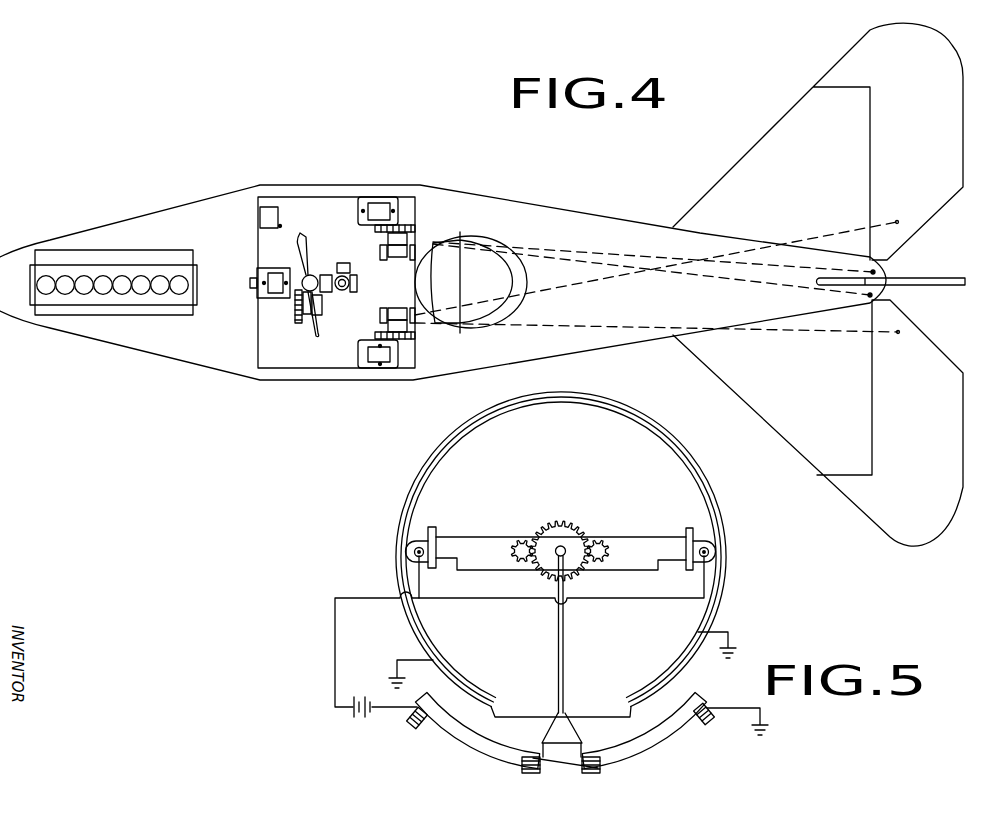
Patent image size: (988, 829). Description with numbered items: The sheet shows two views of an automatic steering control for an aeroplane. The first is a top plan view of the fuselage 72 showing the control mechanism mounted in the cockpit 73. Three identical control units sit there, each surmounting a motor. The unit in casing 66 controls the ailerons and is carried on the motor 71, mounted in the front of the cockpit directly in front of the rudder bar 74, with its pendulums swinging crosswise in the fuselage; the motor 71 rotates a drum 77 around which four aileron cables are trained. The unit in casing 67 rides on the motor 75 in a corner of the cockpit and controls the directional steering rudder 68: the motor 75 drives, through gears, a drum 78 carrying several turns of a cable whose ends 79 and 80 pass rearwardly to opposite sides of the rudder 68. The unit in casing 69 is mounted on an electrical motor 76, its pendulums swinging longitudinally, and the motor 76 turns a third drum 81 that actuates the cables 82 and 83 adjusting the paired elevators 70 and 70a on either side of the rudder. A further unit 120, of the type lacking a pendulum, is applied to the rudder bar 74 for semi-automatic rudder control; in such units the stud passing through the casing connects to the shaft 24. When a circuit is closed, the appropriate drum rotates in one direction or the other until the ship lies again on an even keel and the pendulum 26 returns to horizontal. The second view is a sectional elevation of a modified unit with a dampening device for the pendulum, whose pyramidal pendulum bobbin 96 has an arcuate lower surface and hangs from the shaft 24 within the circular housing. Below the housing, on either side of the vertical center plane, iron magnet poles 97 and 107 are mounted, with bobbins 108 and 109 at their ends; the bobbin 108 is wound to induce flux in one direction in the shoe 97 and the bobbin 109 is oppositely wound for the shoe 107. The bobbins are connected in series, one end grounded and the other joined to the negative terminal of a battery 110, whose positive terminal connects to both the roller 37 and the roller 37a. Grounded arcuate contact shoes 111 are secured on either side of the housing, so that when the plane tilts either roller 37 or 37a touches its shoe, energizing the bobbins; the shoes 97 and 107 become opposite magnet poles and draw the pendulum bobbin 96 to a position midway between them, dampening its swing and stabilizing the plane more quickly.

In FIG. 5, the shaft 24 is at (565, 680).
In FIG. 4, the pendulum 26 is at (392, 206).
In FIG. 5, the roller 37 is at (713, 557).
In FIG. 5, the roller 37a is at (407, 545).
In FIG. 4, the control unit casing 66 is at (275, 292).
In FIG. 4, the control unit casing 67 is at (378, 210).
In FIG. 4, the steering rudder 68 is at (913, 280).
In FIG. 4, the control unit casing 69 is at (372, 362).
In FIG. 4, the elevator 70 is at (870, 70).
In FIG. 4, the elevator 70a is at (908, 512).
In FIG. 4, the motor 71 is at (285, 268).
In FIG. 4, the fuselage 72 is at (188, 345).
In FIG. 4, the cockpit 73 is at (340, 355).
In FIG. 4, the rudder bar 74 is at (308, 252).
In FIG. 4, the motor 75 is at (372, 202).
In FIG. 4, the electrical motor 76 is at (385, 367).
In FIG. 4, the drum 77 is at (316, 335).
In FIG. 4, the drum 78 is at (410, 230).
In FIG. 4, the cable end 79 is at (547, 250).
In FIG. 4, the cable end 80 is at (597, 263).
In FIG. 4, the drum 81 is at (407, 338).
In FIG. 4, the elevator cable 82 is at (582, 330).
In FIG. 4, the elevator cable 83 is at (608, 283).
In FIG. 5, the pendulum contact carrier 96 is at (567, 730).
In FIG. 5, the magnet pole 97 is at (463, 728).
In FIG. 5, the magnet pole 107 is at (667, 700).
In FIG. 5, the bobbin 108 is at (415, 722).
In FIG. 5, the bobbin 109 is at (600, 768).
In FIG. 5, the battery 110 is at (357, 712).
In FIG. 5, the arcuate contact shoe 111 is at (423, 470).
In FIG. 4, the control unit 120 is at (312, 277).